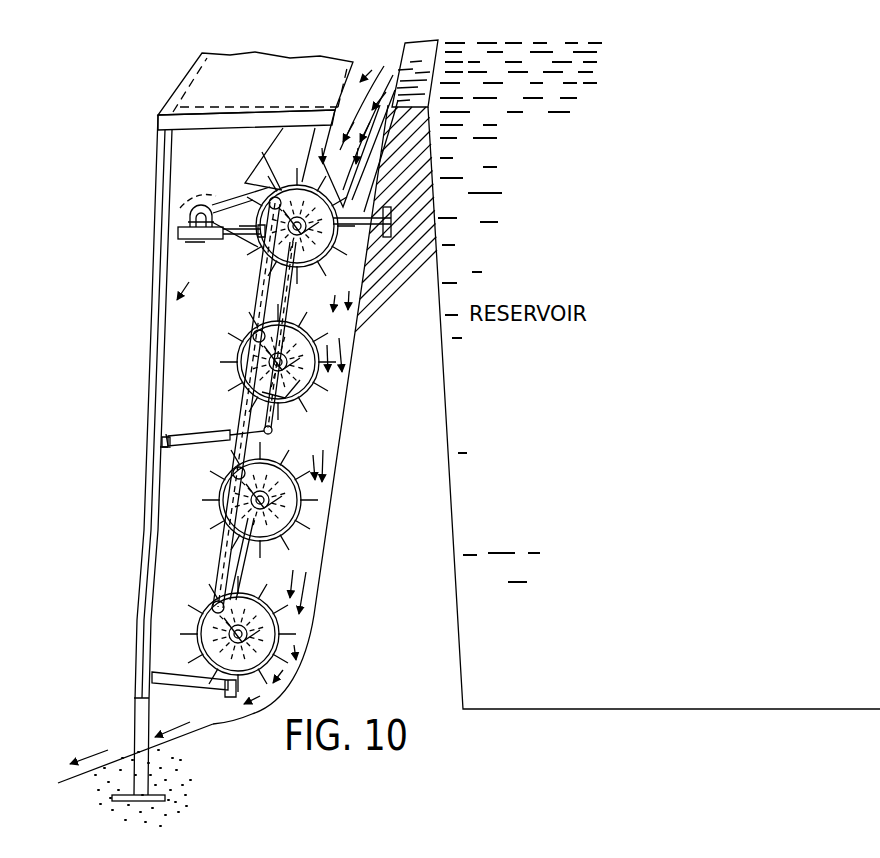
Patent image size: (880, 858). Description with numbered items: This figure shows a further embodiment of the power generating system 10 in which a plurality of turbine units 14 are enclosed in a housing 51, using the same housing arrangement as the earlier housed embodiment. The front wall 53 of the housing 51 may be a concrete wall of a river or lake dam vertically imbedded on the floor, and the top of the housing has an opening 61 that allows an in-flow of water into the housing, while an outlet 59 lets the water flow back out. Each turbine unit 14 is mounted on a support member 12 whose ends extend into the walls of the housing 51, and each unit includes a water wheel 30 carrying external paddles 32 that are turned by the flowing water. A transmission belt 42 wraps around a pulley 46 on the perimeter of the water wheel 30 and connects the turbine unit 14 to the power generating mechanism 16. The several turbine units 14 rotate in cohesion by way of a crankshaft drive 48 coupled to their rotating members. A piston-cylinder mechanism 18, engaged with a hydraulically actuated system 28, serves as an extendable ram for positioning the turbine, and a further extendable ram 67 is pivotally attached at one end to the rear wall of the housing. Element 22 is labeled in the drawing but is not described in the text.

The paddle wheel 10 is at (231, 366).
The flow channel 12 is at (282, 414).
The paddle wheel 14 is at (219, 513).
The bearing 16 is at (190, 208).
The support bracket 18 is at (192, 241).
The housing 22 is at (190, 190).
The mounting arm 28 is at (200, 244).
The paddle blade 30 is at (303, 400).
The deflector plate 32 is at (277, 143).
The inlet guide 42 is at (232, 198).
The drive shaft 46 is at (186, 214).
The drive link 48 is at (262, 289).
The hood 51 is at (151, 141).
The dam wall 53 is at (394, 438).
The support post 59 is at (133, 746).
The water inflow 61 is at (365, 78).
The bracket arm 67 is at (190, 436).